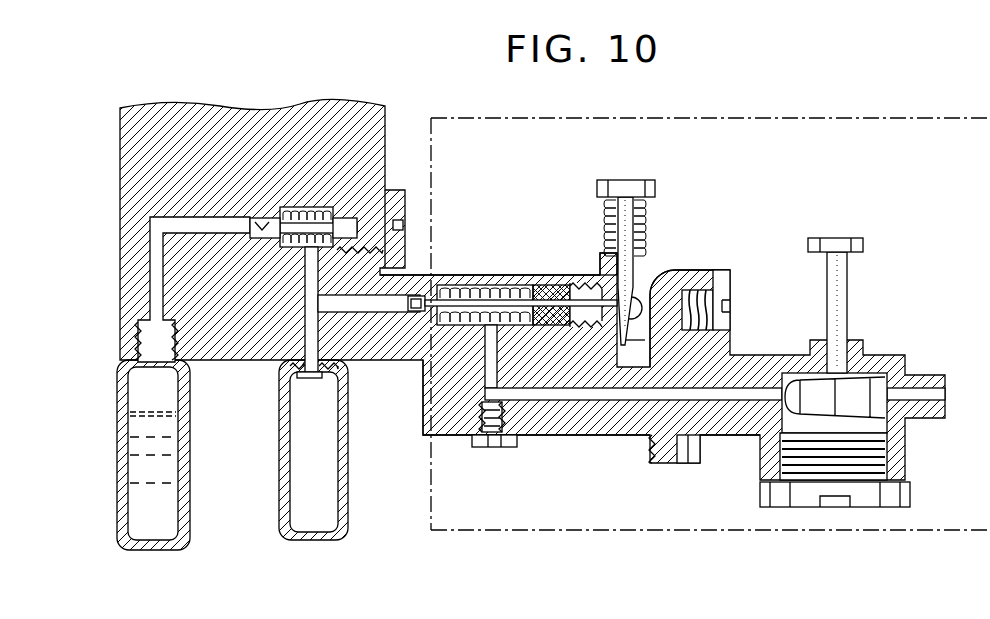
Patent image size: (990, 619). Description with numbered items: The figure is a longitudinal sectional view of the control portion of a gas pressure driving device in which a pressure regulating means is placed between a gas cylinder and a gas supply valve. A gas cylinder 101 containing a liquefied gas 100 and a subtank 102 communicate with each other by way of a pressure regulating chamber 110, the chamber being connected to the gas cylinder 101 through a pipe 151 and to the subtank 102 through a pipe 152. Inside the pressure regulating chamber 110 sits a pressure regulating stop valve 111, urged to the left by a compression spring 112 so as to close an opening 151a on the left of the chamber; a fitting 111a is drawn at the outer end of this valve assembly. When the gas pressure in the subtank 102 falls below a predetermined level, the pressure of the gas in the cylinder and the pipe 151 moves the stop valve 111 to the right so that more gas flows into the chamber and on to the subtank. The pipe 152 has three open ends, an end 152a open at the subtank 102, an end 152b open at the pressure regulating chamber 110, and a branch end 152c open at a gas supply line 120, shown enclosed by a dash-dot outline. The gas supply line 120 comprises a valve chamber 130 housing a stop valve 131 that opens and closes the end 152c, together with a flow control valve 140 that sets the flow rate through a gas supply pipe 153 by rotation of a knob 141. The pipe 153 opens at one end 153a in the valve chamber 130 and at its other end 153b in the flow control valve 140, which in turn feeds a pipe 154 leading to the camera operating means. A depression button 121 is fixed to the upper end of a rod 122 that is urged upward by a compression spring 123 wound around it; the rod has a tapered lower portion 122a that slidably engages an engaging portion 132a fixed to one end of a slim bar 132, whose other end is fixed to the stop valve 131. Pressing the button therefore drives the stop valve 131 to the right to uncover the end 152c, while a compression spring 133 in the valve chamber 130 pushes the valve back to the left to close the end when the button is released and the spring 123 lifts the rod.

The liquefied gas 100 is at (138, 420).
The gas cylinder 101 is at (188, 470).
The subtank 102 is at (348, 475).
The pressure regulating chamber 110 is at (303, 207).
The pressure regulating stop valve 111 is at (268, 243).
The fitting 111a is at (384, 190).
The compression spring 112 is at (338, 218).
The gas supply line 120 is at (788, 128).
The depression button 121 is at (629, 182).
The rod 122 is at (608, 224).
The tapered lower portion 122a is at (646, 280).
The compression spring 123 is at (647, 219).
The valve chamber 130 is at (490, 285).
The stop valve 131 is at (563, 355).
The slim bar 132 is at (591, 285).
The engaging portion 132a is at (622, 340).
The compression spring 133 is at (530, 285).
The flow control valve 140 is at (851, 329).
The knob 141 is at (858, 240).
The pipe 151 is at (201, 217).
The opening 151a is at (258, 218).
The pipe 152 is at (305, 322).
The open end 152a is at (300, 375).
The open end 152b is at (312, 250).
The open end 152c is at (418, 296).
The gas supply pipe 153 is at (604, 402).
The end 153a is at (485, 360).
The end 153b is at (780, 390).
The pipe 154 is at (933, 388).